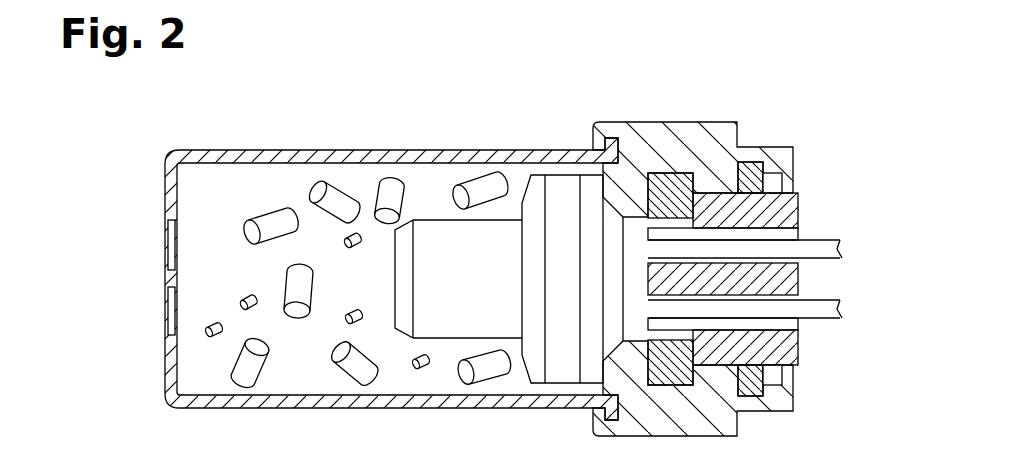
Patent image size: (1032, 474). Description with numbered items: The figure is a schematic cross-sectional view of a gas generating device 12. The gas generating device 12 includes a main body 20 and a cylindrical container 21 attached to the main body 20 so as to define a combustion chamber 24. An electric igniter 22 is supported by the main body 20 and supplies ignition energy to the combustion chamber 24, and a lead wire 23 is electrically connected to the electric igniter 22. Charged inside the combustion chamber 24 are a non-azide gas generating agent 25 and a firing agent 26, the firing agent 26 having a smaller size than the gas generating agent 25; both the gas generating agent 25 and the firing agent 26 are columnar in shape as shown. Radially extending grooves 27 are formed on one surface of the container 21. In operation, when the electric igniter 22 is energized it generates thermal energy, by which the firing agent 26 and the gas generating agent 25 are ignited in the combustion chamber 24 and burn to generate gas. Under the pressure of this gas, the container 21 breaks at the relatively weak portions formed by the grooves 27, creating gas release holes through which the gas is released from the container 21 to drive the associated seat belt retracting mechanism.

The gas generating device 12 is at (462, 128).
The main body 20 is at (668, 122).
The cylindrical container 21 is at (284, 151).
The electric igniter 22 is at (395, 293).
The lead wire 23 is at (822, 301).
The combustion chamber 24 is at (238, 206).
The non-azide gas generating agent 25 is at (330, 358).
The firing agent 26 is at (240, 302).
The radially extending grooves 27 is at (165, 292).